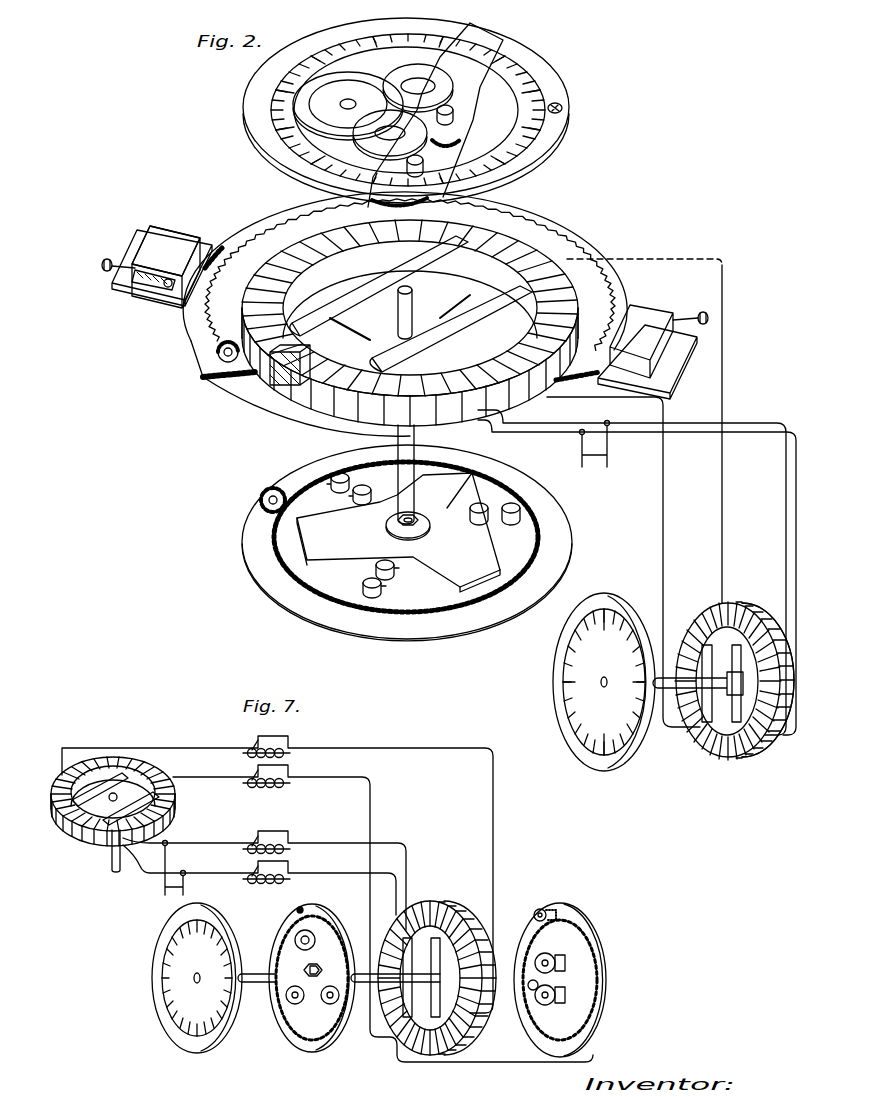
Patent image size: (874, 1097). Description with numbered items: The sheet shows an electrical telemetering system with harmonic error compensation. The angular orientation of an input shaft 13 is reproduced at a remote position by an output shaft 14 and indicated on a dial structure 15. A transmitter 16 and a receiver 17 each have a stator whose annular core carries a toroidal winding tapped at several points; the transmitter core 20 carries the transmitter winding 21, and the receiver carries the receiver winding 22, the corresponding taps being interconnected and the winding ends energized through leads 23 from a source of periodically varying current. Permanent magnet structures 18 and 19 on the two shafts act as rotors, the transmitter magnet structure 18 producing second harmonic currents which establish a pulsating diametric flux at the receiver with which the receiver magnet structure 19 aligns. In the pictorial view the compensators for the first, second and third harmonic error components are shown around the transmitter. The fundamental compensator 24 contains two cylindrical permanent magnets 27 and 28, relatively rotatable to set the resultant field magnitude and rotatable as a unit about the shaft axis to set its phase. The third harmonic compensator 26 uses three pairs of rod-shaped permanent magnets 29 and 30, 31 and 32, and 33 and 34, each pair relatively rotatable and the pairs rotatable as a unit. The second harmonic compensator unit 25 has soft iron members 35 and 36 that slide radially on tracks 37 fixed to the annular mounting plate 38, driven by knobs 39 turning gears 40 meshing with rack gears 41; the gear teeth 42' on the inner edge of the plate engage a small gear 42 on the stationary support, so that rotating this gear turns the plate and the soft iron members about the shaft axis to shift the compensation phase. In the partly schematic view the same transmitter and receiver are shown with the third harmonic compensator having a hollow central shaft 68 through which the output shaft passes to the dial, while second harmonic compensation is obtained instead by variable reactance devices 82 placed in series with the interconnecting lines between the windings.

In FIG. 2, the input shaft 13 is at (398, 470).
In FIG. 7, the input shaft 13 is at (108, 862).
In FIG. 2, the output shaft 14 is at (676, 678).
In FIG. 7, the output shaft 14 is at (255, 984).
In FIG. 2, the dial structure 15 is at (560, 665).
In FIG. 7, the dial structure 15 is at (150, 964).
In FIG. 2, the transmitter 16 is at (232, 402).
In FIG. 2, the receiver 17 is at (700, 778).
In FIG. 2, the transmitter magnet structure 18 is at (425, 268).
In FIG. 7, the transmitter magnet structure 18 is at (108, 810).
In FIG. 2, the receiver magnet structure 19 is at (735, 668).
In FIG. 7, the receiver magnet structure 19 is at (434, 964).
In FIG. 2, the transmitter core 20 is at (300, 356).
In FIG. 2, the transmitter winding 21 is at (275, 388).
In FIG. 7, the transmitter winding 21 is at (165, 818).
In FIG. 2, the receiver winding 22 is at (738, 760).
In FIG. 7, the receiver winding 22 is at (470, 1033).
In FIG. 2, the leads 23 is at (607, 460).
In FIG. 7, the leads 23 is at (183, 892).
In FIG. 2, the fundamental compensator 24 is at (576, 36).
In FIG. 7, the fundamental compensator 24 is at (641, 920).
In FIG. 2, the second harmonic compensator unit 25 is at (216, 213).
In FIG. 2, the third harmonic compensator 26 is at (212, 528).
In FIG. 7, the third harmonic compensator 26 is at (356, 1084).
In FIG. 2, the cylindrical permanent magnet 27 is at (450, 108).
In FIG. 7, the cylindrical permanent magnet 27 is at (568, 963).
In FIG. 2, the cylindrical permanent magnet 28 is at (399, 180).
In FIG. 7, the cylindrical permanent magnet 28 is at (568, 998).
In FIG. 2, the rod-shaped permanent magnet 29 is at (385, 588).
In FIG. 2, the rod-shaped permanent magnet 30 is at (398, 571).
In FIG. 2, the rod-shaped permanent magnet 31 is at (481, 522).
In FIG. 2, the rod-shaped permanent magnet 32 is at (512, 522).
In FIG. 2, the rod-shaped permanent magnet 33 is at (330, 486).
In FIG. 2, the rod-shaped permanent magnet 34 is at (353, 498).
In FIG. 2, the soft iron member 35 is at (647, 352).
In FIG. 2, the soft iron member 36 is at (166, 251).
In FIG. 2, the tracks 37 is at (212, 262).
In FIG. 2, the annular mounting plate 38 is at (580, 232).
In FIG. 2, the knobs 39 is at (100, 262).
In FIG. 2, the gears 40 is at (150, 284).
In FIG. 2, the rack gears 41 is at (168, 288).
In FIG. 2, the small gear 42 is at (194, 357).
In FIG. 2, the toothed ring 42' is at (410, 263).
In FIG. 7, the central shaft 68 is at (308, 966).
In FIG. 7, the reactance devices 82 is at (248, 754).